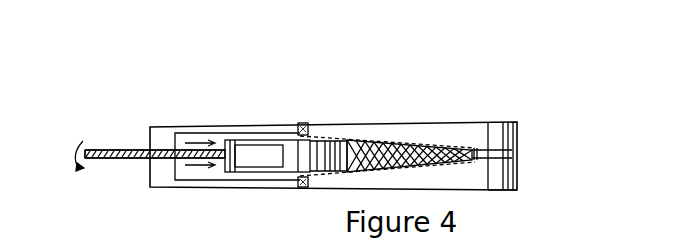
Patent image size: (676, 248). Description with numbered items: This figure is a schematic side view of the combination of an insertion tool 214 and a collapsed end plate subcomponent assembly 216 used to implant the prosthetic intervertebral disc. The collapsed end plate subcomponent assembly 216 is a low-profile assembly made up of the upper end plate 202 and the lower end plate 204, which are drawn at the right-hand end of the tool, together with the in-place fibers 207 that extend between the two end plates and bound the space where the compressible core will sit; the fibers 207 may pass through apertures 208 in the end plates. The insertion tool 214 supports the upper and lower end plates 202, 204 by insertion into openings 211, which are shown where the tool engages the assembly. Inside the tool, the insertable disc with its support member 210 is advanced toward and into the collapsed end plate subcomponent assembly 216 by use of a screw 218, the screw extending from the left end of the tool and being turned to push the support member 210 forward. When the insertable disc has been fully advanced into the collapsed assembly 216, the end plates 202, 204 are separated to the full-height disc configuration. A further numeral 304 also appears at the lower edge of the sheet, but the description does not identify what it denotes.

The upper end plate 202 is at (497, 130).
The lower end plate 204 is at (496, 180).
The fibers 207 is at (424, 147).
The apertures 208 is at (292, 147).
The support member 210 is at (253, 147).
The openings 211 is at (302, 126).
The insertion tool 214 is at (185, 92).
The collapsed end plate subcomponent assembly 216 is at (411, 92).
The screw 218 is at (110, 149).
The component 304 is at (560, 246).